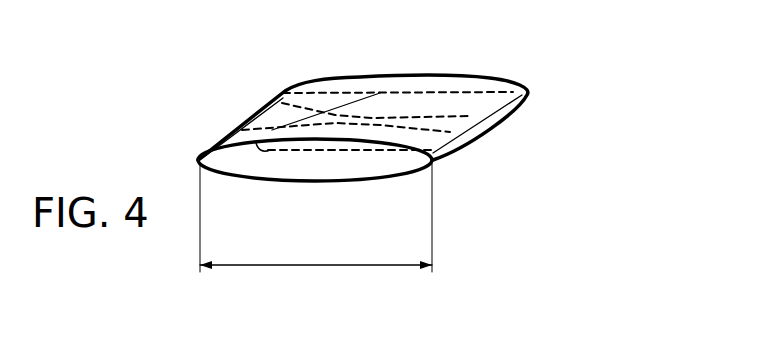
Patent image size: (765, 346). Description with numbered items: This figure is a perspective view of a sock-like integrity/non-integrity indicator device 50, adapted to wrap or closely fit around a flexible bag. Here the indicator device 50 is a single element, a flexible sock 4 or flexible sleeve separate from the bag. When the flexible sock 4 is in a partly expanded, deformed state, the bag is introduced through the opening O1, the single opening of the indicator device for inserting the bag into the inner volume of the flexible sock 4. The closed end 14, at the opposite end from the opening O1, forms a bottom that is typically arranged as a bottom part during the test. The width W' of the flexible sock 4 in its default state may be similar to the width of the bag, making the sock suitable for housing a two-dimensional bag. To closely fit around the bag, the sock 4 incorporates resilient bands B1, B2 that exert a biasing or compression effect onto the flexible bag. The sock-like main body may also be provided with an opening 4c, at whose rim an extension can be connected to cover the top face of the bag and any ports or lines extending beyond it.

The flexible sock 4 is at (188, 132).
The opening 4c is at (258, 141).
The closed end 14 is at (502, 83).
The indicator device 50 is at (550, 80).
The opening O1 is at (360, 162).
The resilient band B1 is at (450, 150).
The resilient band B2 is at (497, 118).
The width of the flexible sock W' is at (316, 229).